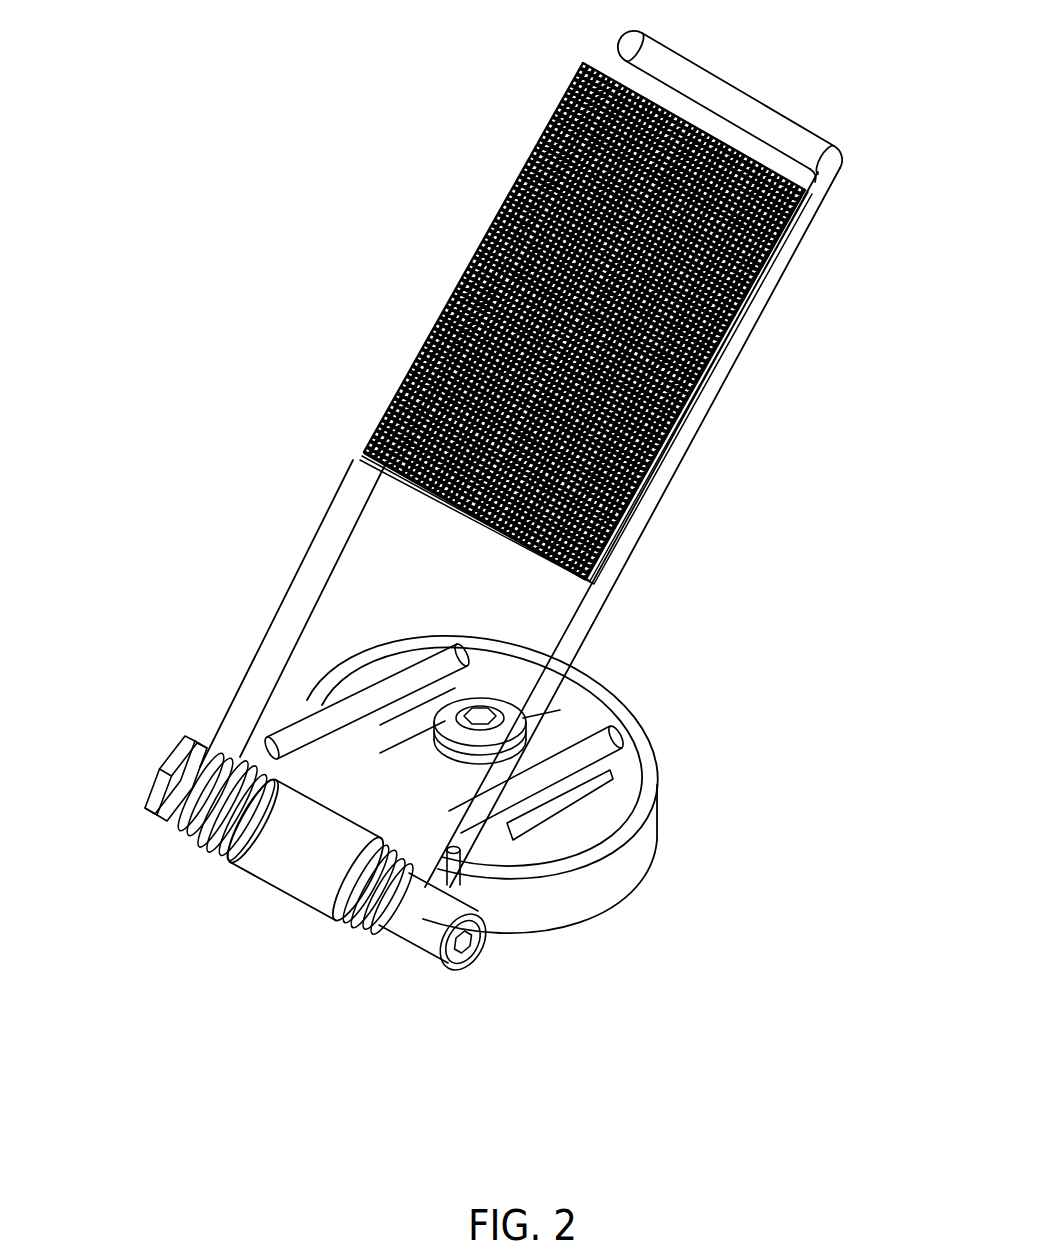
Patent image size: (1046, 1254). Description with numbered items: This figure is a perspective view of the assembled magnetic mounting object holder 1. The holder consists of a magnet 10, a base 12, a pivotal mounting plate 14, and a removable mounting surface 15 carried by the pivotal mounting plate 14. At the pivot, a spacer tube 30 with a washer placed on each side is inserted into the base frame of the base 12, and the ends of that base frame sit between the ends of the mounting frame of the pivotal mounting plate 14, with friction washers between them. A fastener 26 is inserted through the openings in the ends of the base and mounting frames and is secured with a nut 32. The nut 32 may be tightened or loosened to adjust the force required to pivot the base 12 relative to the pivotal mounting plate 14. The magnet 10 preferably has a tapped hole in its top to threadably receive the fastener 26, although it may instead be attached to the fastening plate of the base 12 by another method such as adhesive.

The magnetic mounting object holder 1 is at (160, 960).
The magnet 10 is at (655, 835).
The base 12 is at (578, 688).
The pivotal mounting plate 14 is at (752, 76).
The removable mounting surface 15 is at (712, 338).
The fastener 26 is at (428, 945).
The spacer tube 30 is at (310, 873).
The nut 32 is at (168, 748).